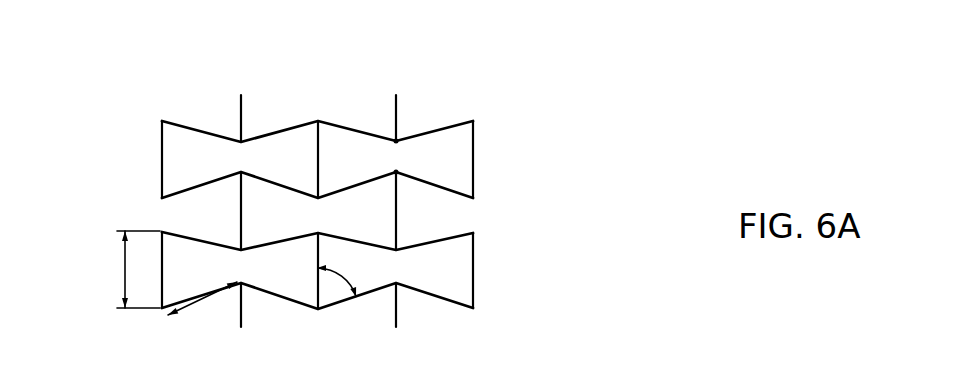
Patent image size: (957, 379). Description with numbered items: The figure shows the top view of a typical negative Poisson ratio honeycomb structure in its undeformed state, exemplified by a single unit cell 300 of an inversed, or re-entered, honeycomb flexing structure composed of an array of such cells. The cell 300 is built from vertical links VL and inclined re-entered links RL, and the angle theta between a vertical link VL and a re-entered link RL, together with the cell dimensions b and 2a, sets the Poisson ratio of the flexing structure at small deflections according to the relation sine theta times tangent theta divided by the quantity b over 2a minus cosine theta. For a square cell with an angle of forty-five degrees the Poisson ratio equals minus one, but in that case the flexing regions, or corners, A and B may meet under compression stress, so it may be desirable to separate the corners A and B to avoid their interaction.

The unit cell 300 is at (178, 100).
The re-entered link RL is at (205, 180).
The vertical link VL is at (240, 218).
The flexing region (corner) A is at (397, 140).
The flexing region (corner) B is at (397, 173).
The cell dimension b is at (132, 269).
The cell dimension 2a is at (202, 309).